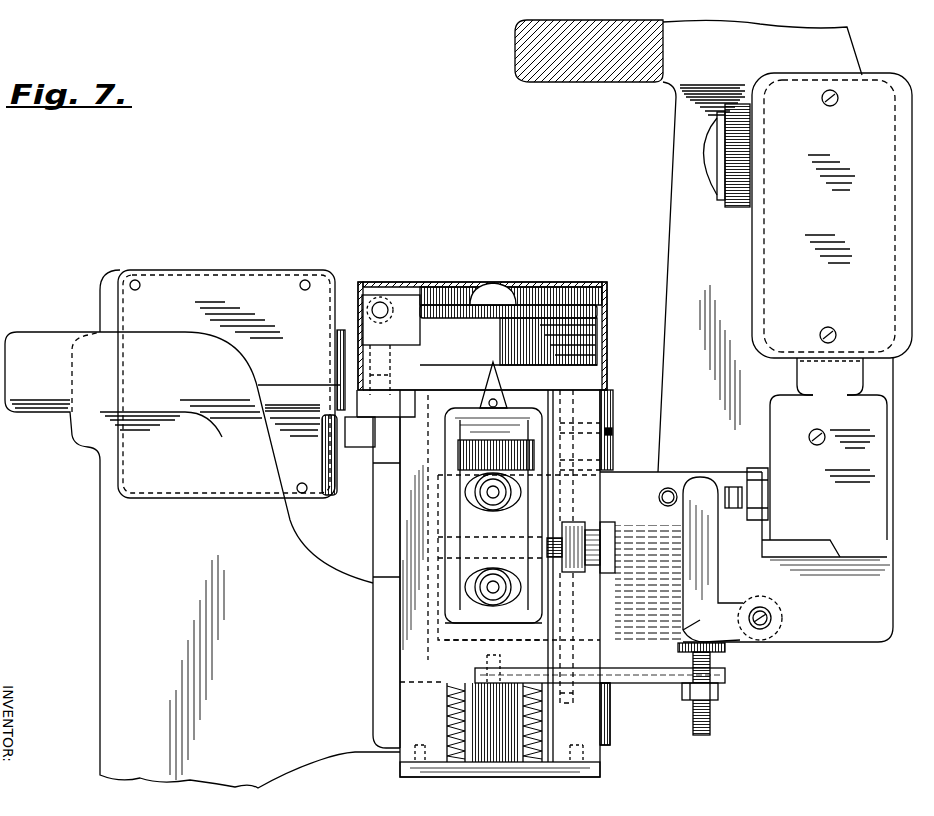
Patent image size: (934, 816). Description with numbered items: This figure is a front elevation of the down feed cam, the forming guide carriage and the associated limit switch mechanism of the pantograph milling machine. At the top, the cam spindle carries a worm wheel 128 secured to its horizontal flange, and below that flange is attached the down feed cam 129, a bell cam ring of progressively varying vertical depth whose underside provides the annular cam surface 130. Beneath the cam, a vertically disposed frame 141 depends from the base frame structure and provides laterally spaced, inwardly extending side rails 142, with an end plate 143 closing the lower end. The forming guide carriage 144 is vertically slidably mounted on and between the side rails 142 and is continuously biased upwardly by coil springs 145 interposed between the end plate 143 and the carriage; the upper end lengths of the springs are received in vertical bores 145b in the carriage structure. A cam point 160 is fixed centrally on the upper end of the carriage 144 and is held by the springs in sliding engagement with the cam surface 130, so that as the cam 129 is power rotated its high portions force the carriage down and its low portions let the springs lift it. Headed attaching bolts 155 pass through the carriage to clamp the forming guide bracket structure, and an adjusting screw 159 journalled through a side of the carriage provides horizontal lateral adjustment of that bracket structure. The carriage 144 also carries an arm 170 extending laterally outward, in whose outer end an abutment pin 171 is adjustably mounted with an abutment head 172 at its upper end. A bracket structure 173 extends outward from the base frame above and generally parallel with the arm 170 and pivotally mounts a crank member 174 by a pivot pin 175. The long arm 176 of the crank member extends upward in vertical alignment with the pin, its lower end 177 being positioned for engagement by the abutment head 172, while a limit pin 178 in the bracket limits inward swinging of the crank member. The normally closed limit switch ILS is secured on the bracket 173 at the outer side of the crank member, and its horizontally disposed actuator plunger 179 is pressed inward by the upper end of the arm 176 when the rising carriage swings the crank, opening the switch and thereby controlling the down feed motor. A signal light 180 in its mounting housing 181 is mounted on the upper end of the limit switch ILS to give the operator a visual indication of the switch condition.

The worm wheel 128 is at (553, 282).
The down feed cam 129 is at (580, 343).
The annular cam surface 130 is at (580, 375).
The cam point 160 is at (490, 380).
The signal light 180 is at (700, 150).
The mounting housing 181 is at (772, 237).
The limit switch ILS is at (797, 447).
The limit pin 178 is at (682, 489).
The adjusting screw 159 is at (562, 545).
The headed attaching bolts 155 is at (488, 582).
The actuator plunger 179 is at (735, 510).
The crank member 174 is at (683, 580).
The long arm 176 is at (713, 577).
The pivot pin 175 is at (771, 618).
The forming guide carriage 144 is at (462, 613).
The vertical bores 145b is at (430, 657).
The frame 141 is at (395, 665).
The lower end 177 is at (697, 630).
The abutment head 172 is at (725, 650).
The bracket structure 173 is at (852, 632).
The side rails 142 is at (408, 722).
The arm 170 is at (630, 685).
The abutment pin 171 is at (712, 720).
The springs 145 is at (520, 745).
The end plate 143 is at (425, 778).